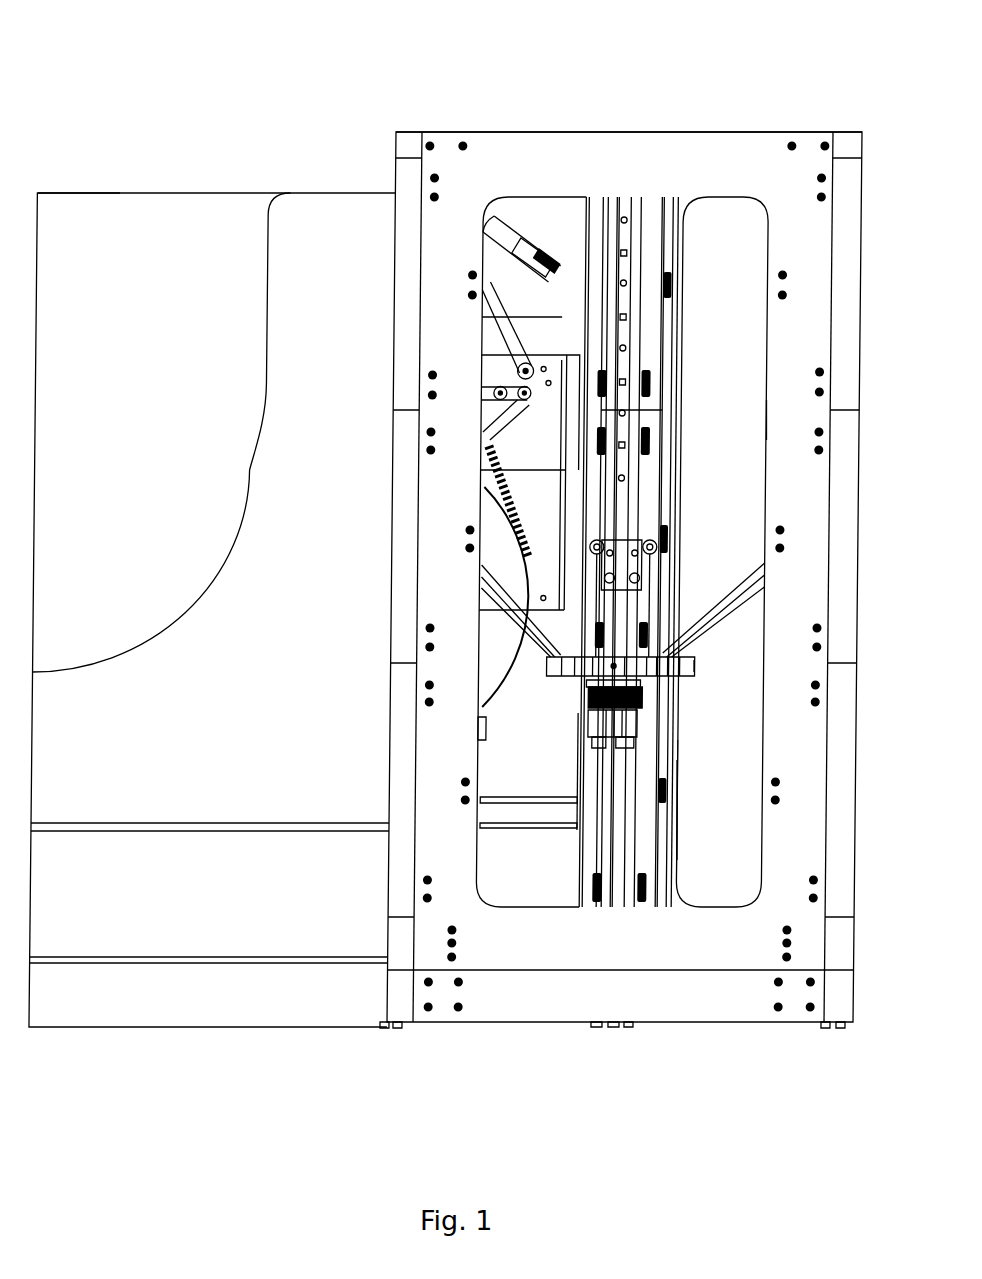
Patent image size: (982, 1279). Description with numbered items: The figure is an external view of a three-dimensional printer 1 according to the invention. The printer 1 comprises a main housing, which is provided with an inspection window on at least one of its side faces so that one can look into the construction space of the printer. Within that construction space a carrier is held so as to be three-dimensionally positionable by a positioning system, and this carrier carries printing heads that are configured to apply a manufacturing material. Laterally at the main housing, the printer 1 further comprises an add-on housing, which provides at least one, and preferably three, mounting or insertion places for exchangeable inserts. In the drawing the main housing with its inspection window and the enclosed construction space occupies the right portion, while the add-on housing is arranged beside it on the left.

The 3D printer 1 is at (552, 80).